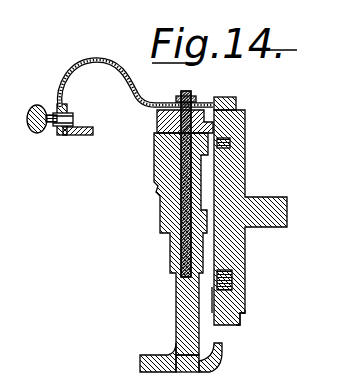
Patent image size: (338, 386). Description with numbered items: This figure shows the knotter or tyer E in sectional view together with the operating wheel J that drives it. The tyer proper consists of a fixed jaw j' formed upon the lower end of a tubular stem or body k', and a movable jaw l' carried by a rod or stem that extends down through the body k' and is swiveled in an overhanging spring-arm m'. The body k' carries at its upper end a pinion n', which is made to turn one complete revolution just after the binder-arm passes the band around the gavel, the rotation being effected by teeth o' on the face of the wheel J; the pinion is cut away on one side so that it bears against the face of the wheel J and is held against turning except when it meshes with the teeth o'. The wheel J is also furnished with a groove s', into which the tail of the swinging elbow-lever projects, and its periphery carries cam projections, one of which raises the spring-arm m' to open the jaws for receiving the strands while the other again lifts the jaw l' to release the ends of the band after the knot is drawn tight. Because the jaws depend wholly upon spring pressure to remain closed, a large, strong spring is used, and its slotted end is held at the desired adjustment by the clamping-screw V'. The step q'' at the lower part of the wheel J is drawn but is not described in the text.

The valve knob V' is at (42, 130).
The spring-arm m' is at (136, 83).
The pinion n' is at (171, 122).
The groove s' is at (240, 145).
The tubular stem or body k' is at (175, 244).
The driving or operating wheel J is at (250, 211).
The step of bracket q'' is at (250, 323).
The teeth o' is at (218, 304).
The knotter or tyer E is at (150, 337).
The movable jaw l' is at (158, 357).
The fixed jaw j' is at (217, 357).